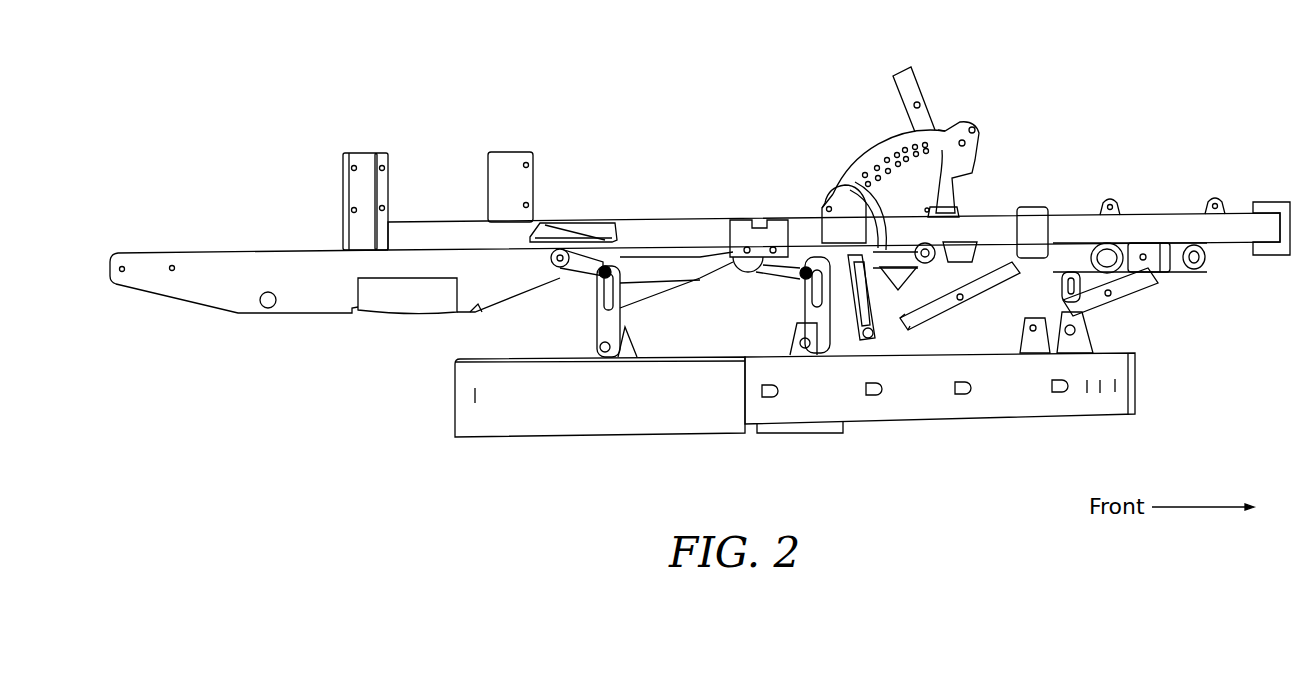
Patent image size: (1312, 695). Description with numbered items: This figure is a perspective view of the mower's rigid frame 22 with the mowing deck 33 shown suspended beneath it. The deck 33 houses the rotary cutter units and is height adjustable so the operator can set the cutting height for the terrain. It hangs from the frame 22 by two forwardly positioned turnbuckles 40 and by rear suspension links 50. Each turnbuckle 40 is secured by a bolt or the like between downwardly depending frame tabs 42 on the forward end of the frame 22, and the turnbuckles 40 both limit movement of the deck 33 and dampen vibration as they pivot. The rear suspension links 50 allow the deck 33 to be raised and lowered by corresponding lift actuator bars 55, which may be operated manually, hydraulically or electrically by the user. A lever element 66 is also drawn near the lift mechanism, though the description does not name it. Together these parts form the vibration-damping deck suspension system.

The frame 22 is at (1146, 222).
The mowing deck 33 is at (805, 405).
The turnbuckle 40 is at (957, 300).
The frame tab 42 is at (1056, 257).
The rear suspension link 50 is at (598, 318).
The lift actuator bar 55 is at (562, 247).
The lever handle 66 is at (947, 127).